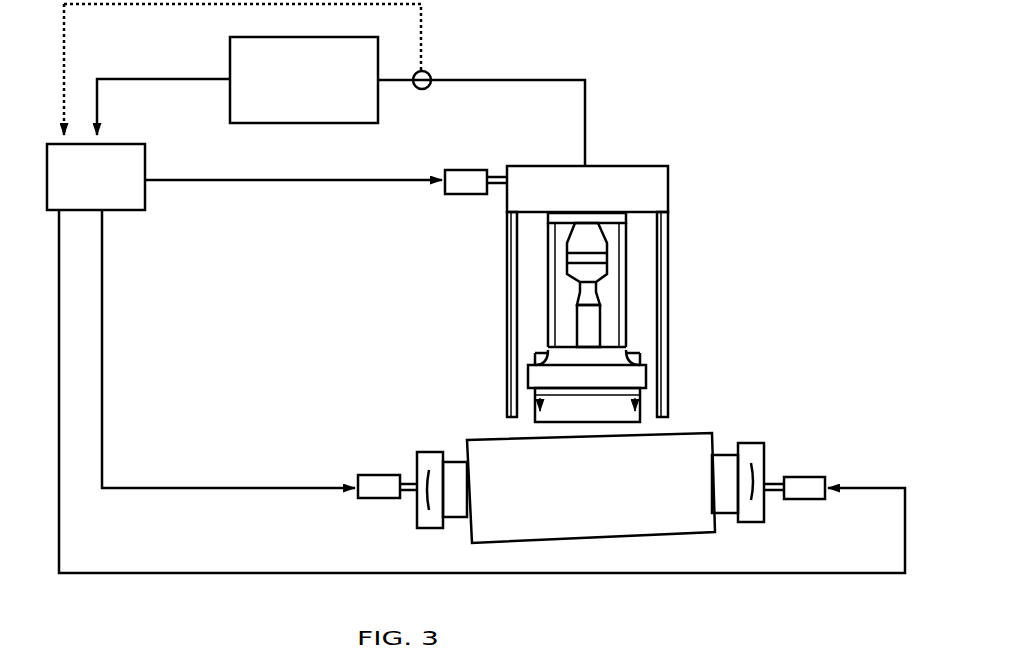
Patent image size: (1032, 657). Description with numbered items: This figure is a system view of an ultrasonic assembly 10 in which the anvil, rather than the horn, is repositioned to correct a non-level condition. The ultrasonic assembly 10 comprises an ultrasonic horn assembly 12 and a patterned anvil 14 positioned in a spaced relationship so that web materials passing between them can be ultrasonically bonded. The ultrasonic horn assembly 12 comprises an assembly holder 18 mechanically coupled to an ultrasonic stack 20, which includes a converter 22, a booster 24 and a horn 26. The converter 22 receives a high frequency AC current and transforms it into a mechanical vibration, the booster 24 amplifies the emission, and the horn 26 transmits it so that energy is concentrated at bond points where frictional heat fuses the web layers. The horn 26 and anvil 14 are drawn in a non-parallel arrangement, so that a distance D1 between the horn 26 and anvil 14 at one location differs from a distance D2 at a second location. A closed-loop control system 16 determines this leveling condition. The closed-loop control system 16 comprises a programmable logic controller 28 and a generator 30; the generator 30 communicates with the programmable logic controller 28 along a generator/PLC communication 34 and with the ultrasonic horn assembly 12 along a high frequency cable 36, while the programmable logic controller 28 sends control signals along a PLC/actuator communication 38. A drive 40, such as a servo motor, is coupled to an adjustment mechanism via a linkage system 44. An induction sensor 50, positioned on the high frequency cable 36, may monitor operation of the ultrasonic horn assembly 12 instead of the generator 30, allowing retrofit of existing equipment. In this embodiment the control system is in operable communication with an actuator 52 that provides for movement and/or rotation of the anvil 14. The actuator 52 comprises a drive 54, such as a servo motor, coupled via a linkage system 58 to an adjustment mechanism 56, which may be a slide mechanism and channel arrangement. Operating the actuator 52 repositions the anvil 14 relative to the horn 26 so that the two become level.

The ultrasonic assembly 10 is at (648, 65).
The ultrasonic horn assembly 12 is at (708, 254).
The patterned anvil 14 is at (653, 537).
The closed-loop control system 16 is at (209, 215).
The assembly holder 18 is at (505, 333).
The ultrasonic stack 20 is at (541, 270).
The converter 22 is at (608, 270).
The booster 24 is at (598, 289).
The horn 26 is at (642, 398).
The programmable logic controller 28 is at (117, 210).
The generator 30 is at (340, 124).
The generator/PLC communication 34 is at (136, 80).
The high frequency cable 36 is at (492, 80).
The PLC/actuator communication 38 is at (250, 180).
The drive 40 is at (472, 194).
The linkage system 44 is at (498, 190).
The induction sensor 50 is at (425, 90).
The actuator 52 is at (354, 539).
The drive 54 is at (371, 473).
The adjustment mechanism 56 is at (419, 506).
The linkage system 58 is at (413, 479).
The distance at first location D1 is at (636, 441).
The distance at second location D2 is at (537, 443).